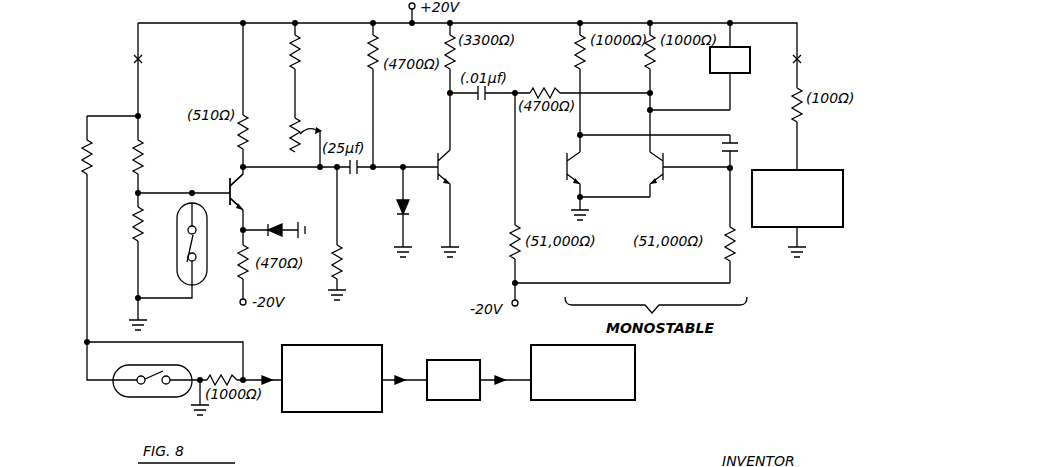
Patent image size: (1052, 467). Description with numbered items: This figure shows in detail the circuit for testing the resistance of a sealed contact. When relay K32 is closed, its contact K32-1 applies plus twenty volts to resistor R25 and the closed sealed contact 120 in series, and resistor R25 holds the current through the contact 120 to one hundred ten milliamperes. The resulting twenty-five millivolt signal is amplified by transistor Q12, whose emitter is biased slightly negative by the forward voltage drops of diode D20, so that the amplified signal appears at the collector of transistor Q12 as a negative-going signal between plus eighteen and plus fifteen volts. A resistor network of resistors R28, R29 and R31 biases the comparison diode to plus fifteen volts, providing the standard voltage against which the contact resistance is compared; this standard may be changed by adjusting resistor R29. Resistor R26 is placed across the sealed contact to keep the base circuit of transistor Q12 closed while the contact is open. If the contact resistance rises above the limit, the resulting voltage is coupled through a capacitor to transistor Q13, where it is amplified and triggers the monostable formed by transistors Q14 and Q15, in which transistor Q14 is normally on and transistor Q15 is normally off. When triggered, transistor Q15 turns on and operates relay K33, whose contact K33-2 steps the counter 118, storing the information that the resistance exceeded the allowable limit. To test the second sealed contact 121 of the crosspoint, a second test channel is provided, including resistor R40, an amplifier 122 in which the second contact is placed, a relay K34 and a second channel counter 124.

The counter 118 is at (765, 170).
The sealed contact 120 is at (178, 212).
The second sealed contact 121 is at (143, 397).
The amplifier 122 is at (325, 414).
The second channel counter 124 is at (635, 372).
The resistor R40 is at (82, 147).
The resistor R25 is at (165, 153).
The resistor R26 is at (170, 298).
The resistor R28 is at (326, 70).
The resistor R29 is at (326, 126).
The resistor R31 is at (365, 233).
The transistor Q12 is at (249, 192).
The transistor Q13 is at (458, 203).
The transistor Q14 is at (586, 186).
The transistor Q15 is at (655, 174).
The diode D20 is at (282, 220).
The relay K33 is at (730, 66).
The relay K34 is at (431, 380).
The contact K32-1 is at (162, 59).
The contact K33-2 is at (821, 59).